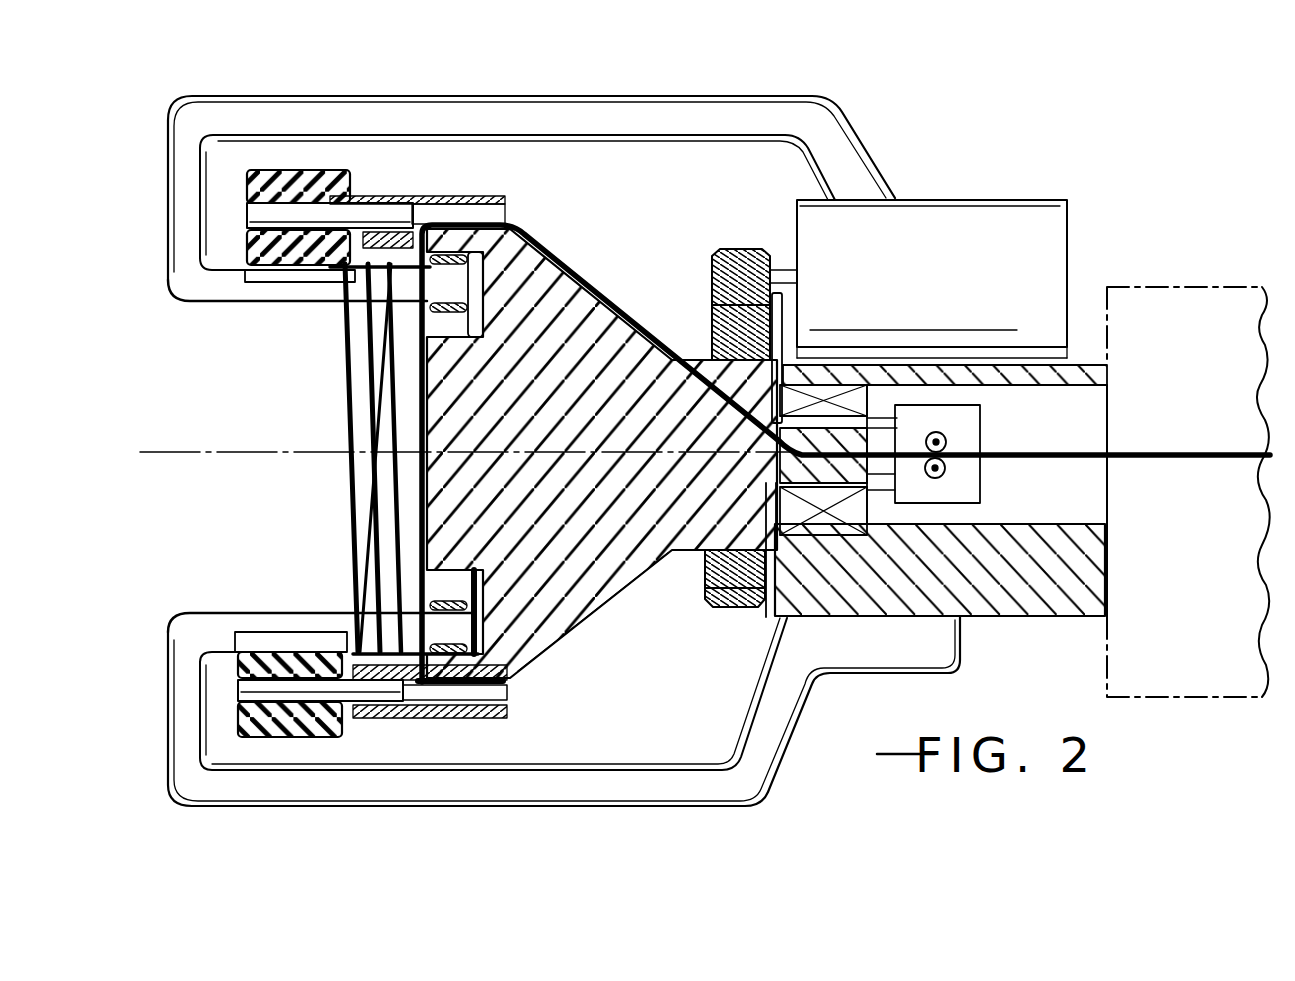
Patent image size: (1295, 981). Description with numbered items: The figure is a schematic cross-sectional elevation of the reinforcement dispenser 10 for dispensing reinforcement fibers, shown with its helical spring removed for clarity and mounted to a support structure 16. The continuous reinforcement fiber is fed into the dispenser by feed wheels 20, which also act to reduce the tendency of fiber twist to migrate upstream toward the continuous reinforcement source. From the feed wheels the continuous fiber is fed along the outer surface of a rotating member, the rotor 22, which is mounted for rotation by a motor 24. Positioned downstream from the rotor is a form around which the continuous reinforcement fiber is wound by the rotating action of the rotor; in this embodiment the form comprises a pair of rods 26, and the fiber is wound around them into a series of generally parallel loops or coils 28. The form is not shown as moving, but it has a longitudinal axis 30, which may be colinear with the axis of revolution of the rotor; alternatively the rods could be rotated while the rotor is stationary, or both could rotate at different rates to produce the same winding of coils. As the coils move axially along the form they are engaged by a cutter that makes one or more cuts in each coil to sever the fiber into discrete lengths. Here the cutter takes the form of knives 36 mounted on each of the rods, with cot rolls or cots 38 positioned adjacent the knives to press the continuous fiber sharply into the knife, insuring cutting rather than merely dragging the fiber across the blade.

The gimbal scanner assembly 10 is at (1000, 178).
The support structure 16 is at (1146, 448).
The feed wheels 20 is at (950, 441).
The rotor 22 is at (579, 620).
The motor 24 is at (1062, 202).
The rods 26 is at (480, 279).
The coils 28 is at (383, 508).
The longitudinal axis 30 is at (250, 452).
The knives 36 is at (282, 283).
The cots 38 is at (306, 170).